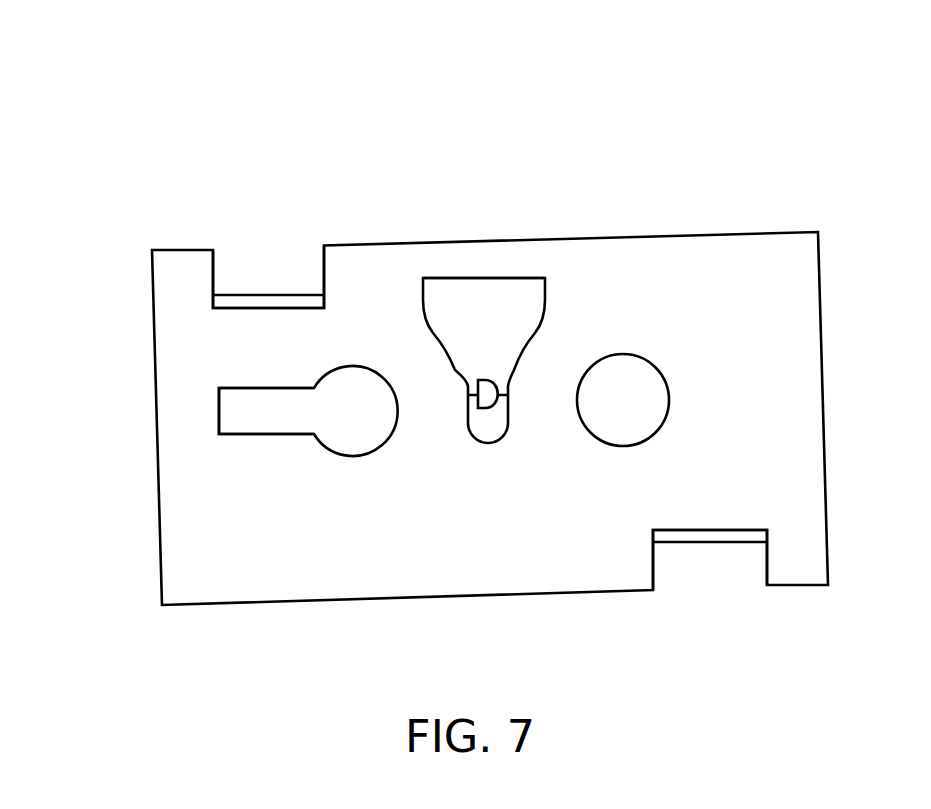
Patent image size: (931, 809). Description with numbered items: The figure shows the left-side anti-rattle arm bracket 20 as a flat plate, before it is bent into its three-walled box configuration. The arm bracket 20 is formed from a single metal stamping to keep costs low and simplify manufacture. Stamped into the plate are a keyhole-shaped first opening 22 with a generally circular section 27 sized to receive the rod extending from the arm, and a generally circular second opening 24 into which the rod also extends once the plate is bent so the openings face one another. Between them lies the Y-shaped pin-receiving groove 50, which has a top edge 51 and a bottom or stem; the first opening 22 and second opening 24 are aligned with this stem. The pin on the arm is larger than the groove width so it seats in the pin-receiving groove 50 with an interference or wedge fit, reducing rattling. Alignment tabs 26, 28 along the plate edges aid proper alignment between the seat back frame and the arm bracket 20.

The arm bracket 20 is at (192, 215).
The first opening 22 is at (219, 407).
The second opening 24 is at (623, 400).
The alignment tab 26 is at (287, 298).
The generally circular section 27 is at (308, 411).
The alignment tab 28 is at (722, 542).
The pin-receiving groove 50 is at (484, 360).
The top edge 51 is at (490, 277).